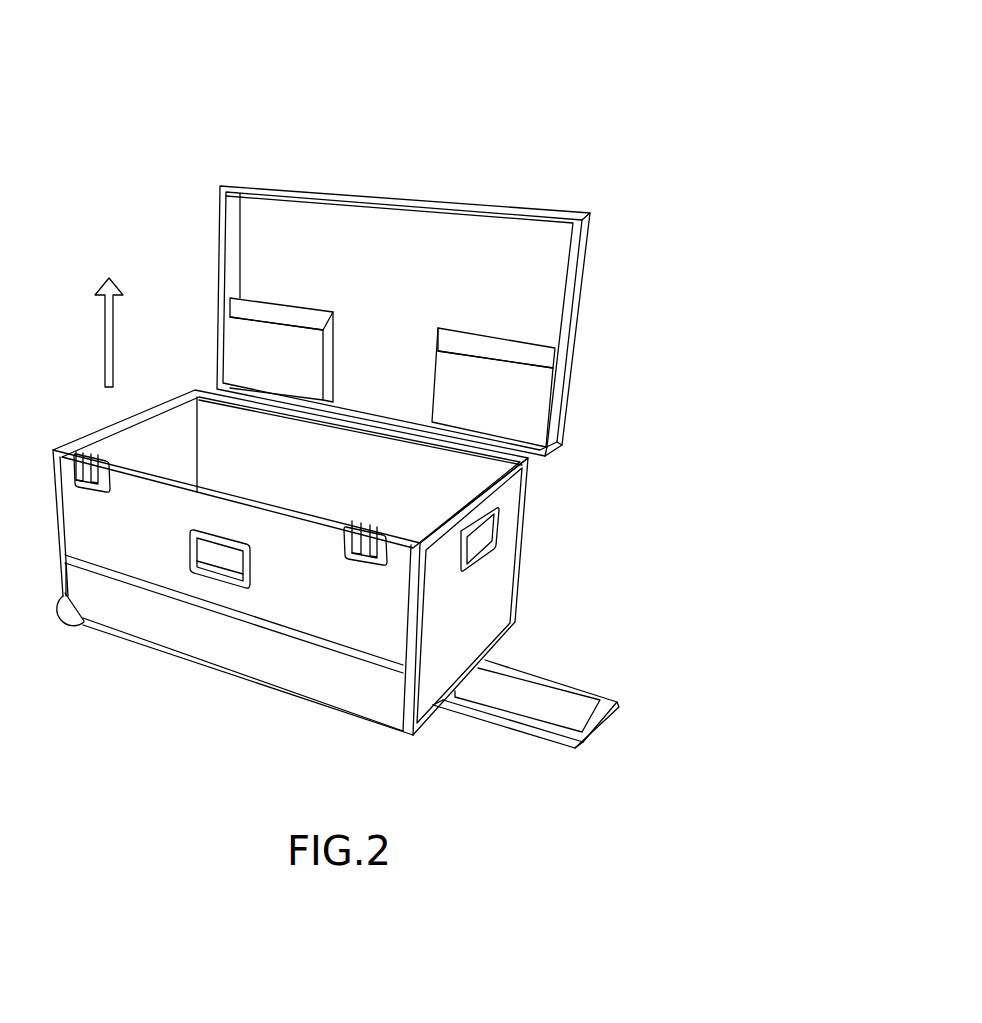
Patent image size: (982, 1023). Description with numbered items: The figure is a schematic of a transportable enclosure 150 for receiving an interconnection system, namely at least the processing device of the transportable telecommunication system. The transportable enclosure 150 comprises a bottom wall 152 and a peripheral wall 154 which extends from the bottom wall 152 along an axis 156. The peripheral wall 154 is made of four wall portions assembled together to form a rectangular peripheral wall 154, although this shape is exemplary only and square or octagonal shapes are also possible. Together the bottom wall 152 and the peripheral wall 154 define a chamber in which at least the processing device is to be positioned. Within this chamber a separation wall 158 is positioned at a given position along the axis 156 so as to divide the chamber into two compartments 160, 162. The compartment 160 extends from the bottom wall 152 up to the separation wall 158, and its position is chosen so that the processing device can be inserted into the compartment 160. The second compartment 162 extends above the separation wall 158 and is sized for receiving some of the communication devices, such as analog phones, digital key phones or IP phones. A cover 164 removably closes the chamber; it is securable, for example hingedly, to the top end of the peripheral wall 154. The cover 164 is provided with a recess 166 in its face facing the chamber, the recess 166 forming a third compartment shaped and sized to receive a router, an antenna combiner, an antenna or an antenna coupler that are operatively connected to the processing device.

The transportable enclosure 150 is at (441, 89).
The bottom wall 152 is at (233, 672).
The peripheral wall 154 is at (510, 555).
The axis 156 is at (112, 349).
The separation wall 158 is at (132, 582).
The compartment 160 is at (357, 683).
The second compartment 162 is at (384, 617).
The cover 164 is at (523, 207).
The recess 166 is at (387, 333).